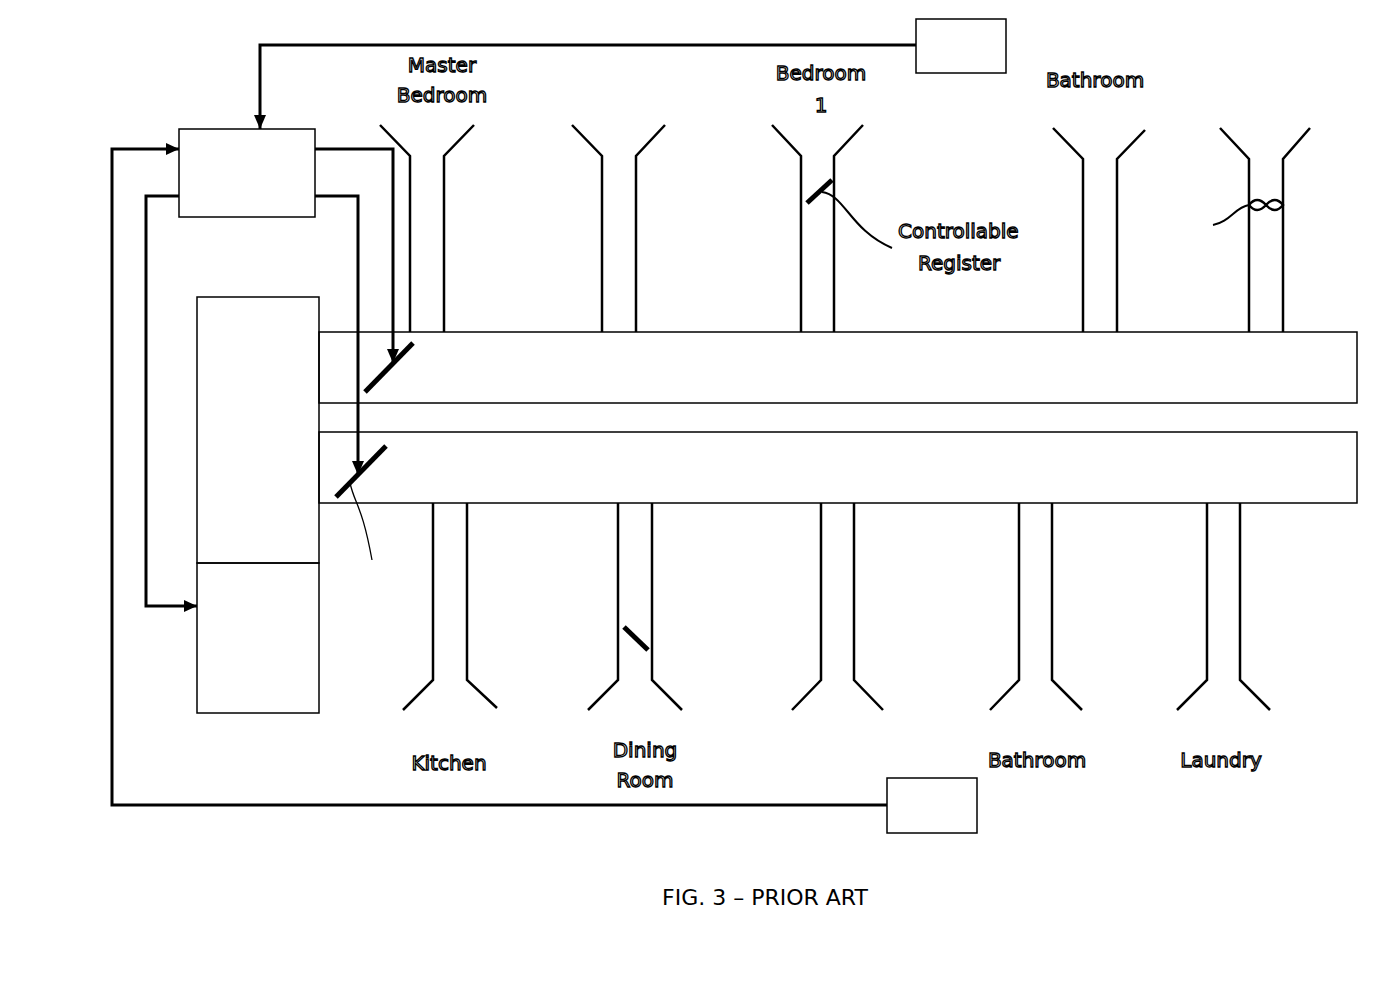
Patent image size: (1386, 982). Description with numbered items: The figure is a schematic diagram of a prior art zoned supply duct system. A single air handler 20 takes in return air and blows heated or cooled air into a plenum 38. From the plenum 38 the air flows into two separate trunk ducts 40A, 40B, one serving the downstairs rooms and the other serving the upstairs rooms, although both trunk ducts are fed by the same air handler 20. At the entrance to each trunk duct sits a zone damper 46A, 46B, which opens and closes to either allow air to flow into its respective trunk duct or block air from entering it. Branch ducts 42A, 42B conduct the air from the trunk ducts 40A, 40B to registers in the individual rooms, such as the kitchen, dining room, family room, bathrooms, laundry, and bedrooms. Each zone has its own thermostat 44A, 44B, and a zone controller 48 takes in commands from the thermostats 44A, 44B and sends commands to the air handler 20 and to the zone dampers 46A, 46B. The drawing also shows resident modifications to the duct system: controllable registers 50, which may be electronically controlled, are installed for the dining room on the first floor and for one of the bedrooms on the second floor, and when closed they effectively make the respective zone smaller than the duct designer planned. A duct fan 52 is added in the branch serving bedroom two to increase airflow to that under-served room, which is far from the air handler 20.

The air handler 20 is at (252, 713).
The plenum 38 is at (274, 297).
The zone controller 48 is at (222, 128).
The trunk duct 40A is at (527, 504).
The trunk duct 40B is at (552, 332).
The branch duct 42A is at (855, 597).
The branch duct 42B is at (637, 212).
The thermostat 44A is at (977, 792).
The thermostat 44B is at (1006, 59).
The zone damper 46A is at (385, 450).
The zone damper 46B is at (412, 348).
The controllable register 50 is at (640, 635).
The duct fan 52 is at (1249, 205).